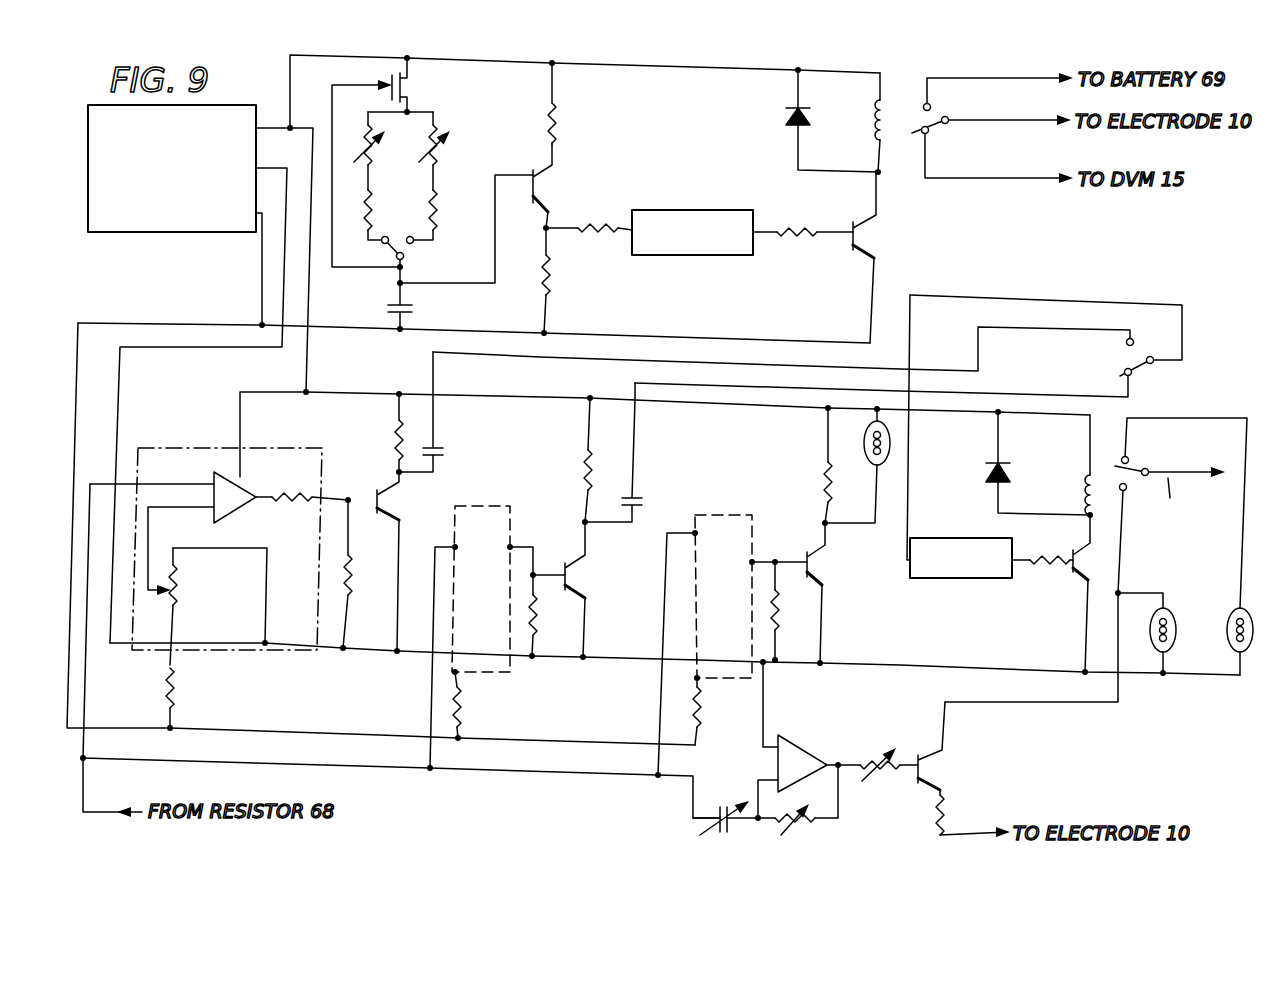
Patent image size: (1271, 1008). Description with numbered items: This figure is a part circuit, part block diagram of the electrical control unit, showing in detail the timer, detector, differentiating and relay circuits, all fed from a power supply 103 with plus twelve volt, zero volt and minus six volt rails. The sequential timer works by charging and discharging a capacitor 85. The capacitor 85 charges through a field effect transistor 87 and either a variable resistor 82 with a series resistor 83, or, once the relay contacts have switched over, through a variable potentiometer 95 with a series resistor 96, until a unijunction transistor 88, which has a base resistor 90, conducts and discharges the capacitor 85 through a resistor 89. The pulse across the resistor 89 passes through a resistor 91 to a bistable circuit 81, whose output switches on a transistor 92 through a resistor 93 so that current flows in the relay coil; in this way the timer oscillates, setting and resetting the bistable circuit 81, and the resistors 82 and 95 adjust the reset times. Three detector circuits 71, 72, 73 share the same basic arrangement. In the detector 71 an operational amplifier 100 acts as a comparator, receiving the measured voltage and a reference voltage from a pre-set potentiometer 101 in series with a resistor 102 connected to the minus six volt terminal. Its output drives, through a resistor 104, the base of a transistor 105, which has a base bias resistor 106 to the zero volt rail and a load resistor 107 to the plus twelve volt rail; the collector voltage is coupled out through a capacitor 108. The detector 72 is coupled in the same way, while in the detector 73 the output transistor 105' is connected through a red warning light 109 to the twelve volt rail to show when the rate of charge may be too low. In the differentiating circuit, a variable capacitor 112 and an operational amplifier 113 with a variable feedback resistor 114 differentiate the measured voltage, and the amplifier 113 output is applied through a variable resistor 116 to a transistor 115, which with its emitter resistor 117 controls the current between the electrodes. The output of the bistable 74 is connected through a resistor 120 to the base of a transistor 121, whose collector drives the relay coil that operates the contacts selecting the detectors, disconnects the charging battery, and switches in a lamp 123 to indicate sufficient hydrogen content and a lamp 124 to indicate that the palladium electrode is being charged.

The power supply 103 is at (170, 233).
The field effect transistor 87 is at (412, 88).
The variable resistor 82 is at (372, 152).
The variable potentiometer 95 is at (437, 152).
The resistor 83 is at (372, 206).
The resistor 96 is at (437, 206).
The capacitor 85 is at (414, 312).
The base resistor 90 is at (556, 128).
The unijunction transistor 88 is at (538, 206).
The resistor 89 is at (550, 268).
The resistor 91 is at (596, 220).
The bistable circuit 81 is at (680, 210).
The resistor 93 is at (797, 225).
The transistor 92 is at (880, 232).
The operational amplifier 100 is at (240, 492).
The resistor 104 is at (302, 517).
The pre-set potentiometer 101 is at (178, 578).
The resistor 102 is at (174, 680).
The detector circuit 71 is at (262, 655).
The load resistor 107 is at (395, 414).
The capacitor 108 is at (440, 442).
The transistor 105 is at (409, 561).
The base bias resistor 106 is at (352, 572).
The detector circuit 72 is at (492, 674).
The detector circuit 73 is at (726, 512).
The red warning light 109 is at (864, 443).
The transistor 105' is at (843, 593).
The variable capacitor 112 is at (721, 797).
The operational amplifier 113 is at (795, 746).
The variable resistor 116 is at (861, 752).
The variable feedback resistor 114 is at (802, 812).
The transistor 115 is at (945, 758).
The emitter resistor 117 is at (948, 812).
The resistor 120 is at (1042, 543).
The transistor 121 is at (1078, 584).
The bistable 74 is at (962, 580).
The lamp 124 is at (1178, 618).
The lamp 123 is at (1226, 638).